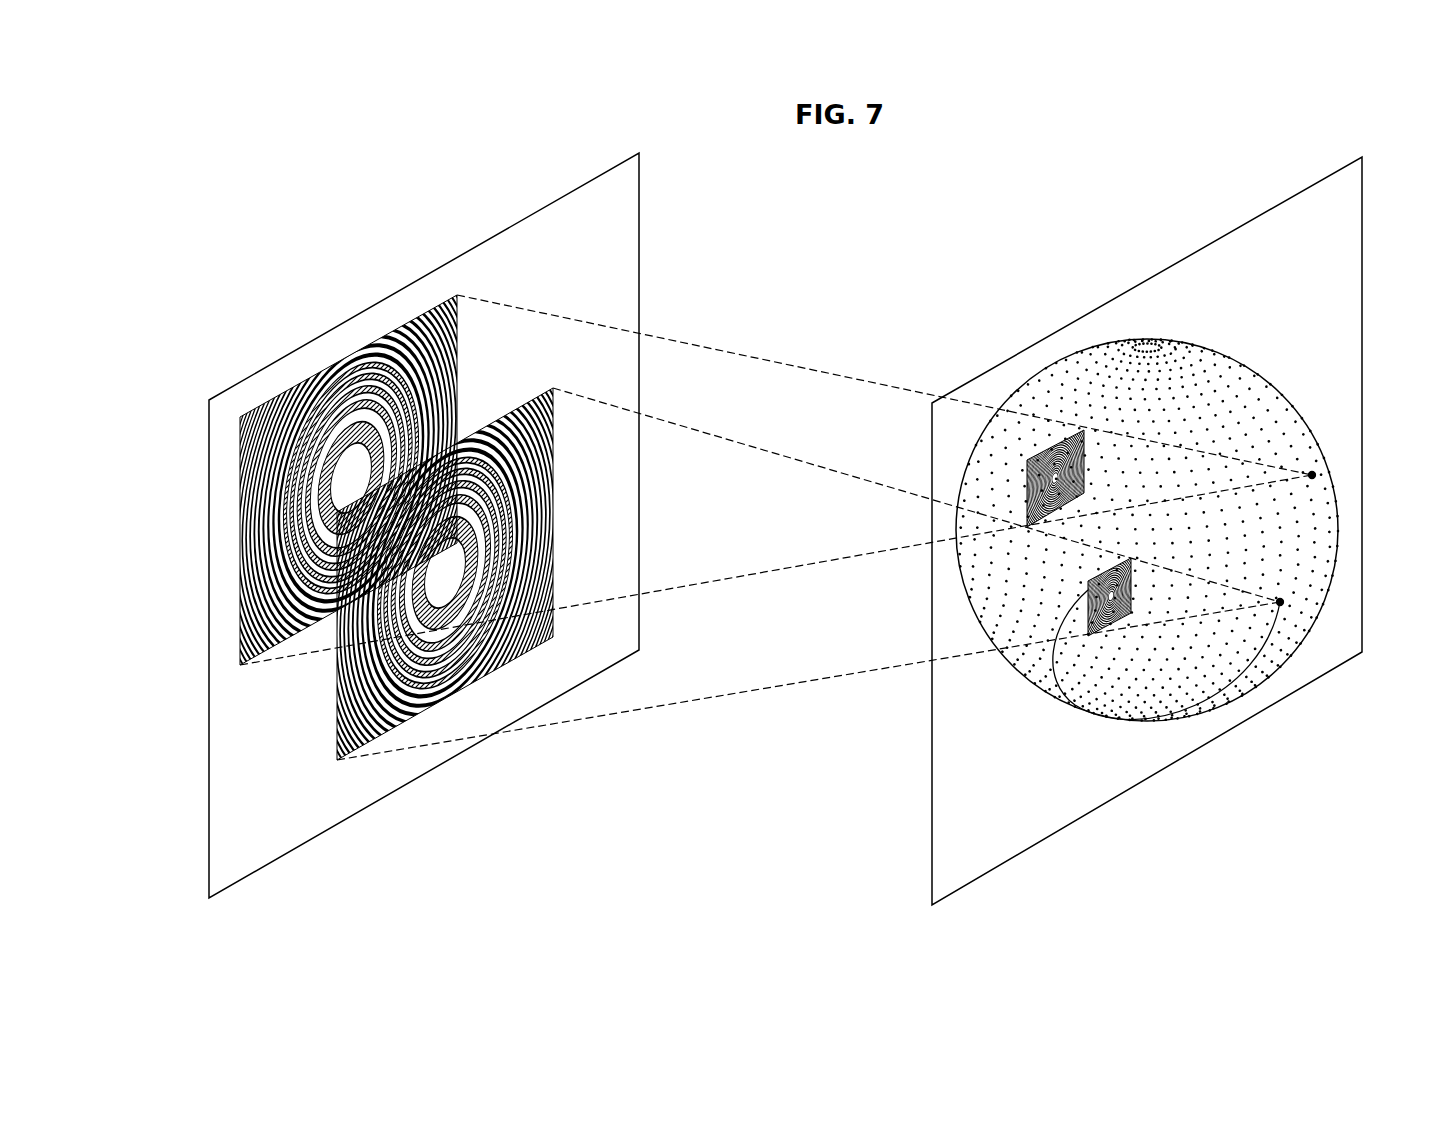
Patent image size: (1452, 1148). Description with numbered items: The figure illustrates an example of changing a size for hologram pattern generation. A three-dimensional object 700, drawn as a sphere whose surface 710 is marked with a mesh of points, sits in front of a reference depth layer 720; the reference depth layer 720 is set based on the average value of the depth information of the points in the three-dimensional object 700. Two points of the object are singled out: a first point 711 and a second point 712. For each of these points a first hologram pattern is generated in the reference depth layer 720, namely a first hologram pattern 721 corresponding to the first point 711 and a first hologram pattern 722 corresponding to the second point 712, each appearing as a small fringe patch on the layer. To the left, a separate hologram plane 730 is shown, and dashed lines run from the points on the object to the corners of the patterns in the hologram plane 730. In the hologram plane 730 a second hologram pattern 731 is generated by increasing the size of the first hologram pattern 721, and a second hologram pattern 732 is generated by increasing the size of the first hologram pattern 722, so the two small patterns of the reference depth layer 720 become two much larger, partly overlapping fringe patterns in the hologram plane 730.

The 3D object 700 is at (1198, 337).
The object surface 710 is at (1268, 373).
The first point 711 is at (1315, 475).
The second point 712 is at (1280, 604).
The reference depth layer 720 is at (1120, 295).
The first hologram pattern 721 is at (1038, 452).
The first hologram pattern 722 is at (1055, 683).
The hologram plane 730 is at (328, 332).
The second hologram pattern 731 is at (420, 313).
The second hologram pattern 732 is at (337, 727).